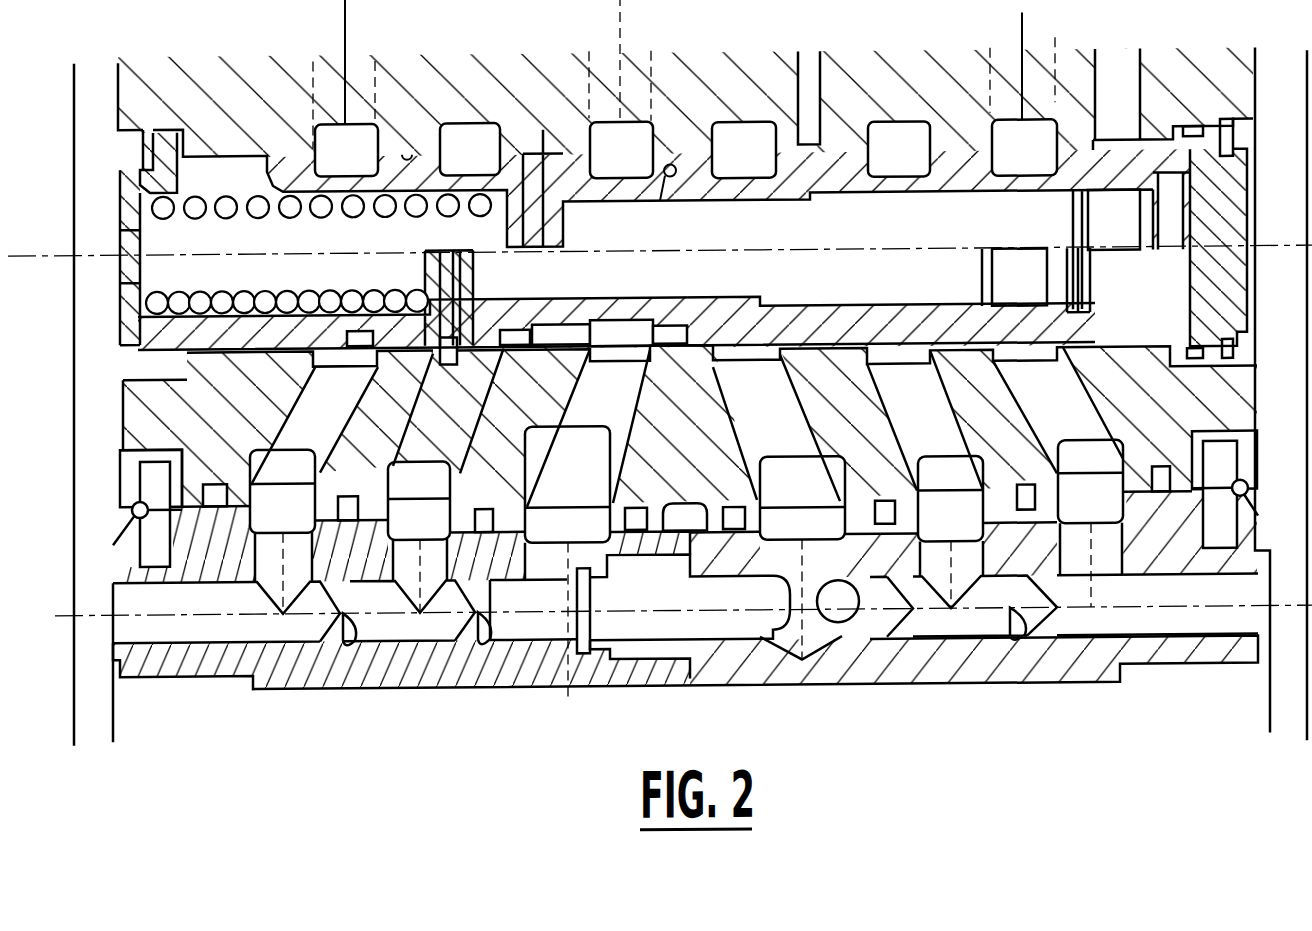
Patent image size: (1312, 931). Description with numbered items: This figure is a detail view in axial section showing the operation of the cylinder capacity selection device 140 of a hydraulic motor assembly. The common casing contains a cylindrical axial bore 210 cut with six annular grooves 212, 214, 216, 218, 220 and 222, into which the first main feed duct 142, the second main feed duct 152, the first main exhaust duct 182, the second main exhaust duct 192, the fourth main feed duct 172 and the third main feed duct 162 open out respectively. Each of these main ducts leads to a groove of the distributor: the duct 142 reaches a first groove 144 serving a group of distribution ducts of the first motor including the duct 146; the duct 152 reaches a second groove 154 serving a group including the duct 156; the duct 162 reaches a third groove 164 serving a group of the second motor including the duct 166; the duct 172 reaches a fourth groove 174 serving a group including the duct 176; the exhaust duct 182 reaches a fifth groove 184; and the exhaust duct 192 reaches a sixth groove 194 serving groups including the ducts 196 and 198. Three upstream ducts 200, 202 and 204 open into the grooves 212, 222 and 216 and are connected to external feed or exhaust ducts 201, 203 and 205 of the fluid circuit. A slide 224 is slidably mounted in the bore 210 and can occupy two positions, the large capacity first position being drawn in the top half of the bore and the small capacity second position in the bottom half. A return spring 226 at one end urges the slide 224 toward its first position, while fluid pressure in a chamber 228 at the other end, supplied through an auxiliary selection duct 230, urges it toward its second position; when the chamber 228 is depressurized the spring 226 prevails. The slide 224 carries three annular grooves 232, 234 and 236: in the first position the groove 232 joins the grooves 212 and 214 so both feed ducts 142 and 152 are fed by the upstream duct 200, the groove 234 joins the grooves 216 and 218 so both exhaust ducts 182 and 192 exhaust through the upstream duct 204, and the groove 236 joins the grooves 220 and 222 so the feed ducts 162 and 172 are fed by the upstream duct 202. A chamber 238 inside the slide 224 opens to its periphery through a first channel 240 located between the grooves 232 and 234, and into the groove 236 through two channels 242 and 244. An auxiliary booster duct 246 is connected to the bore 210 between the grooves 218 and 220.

The rotary actuator assembly 140 is at (568, 135).
The first main feed duct 142 is at (318, 398).
The first groove 144 is at (257, 450).
The distribution duct 146 is at (203, 630).
The second main feed duct 152 is at (440, 395).
The second groove 154 is at (390, 467).
The distribution duct 156 is at (390, 630).
The third main feed duct 162 is at (1080, 393).
The third groove 164 is at (1113, 441).
The distribution duct 166 is at (1137, 623).
The fourth main feed duct 172 is at (923, 420).
The fourth groove 174 is at (977, 467).
The distribution duct 176 is at (970, 623).
The first main exhaust duct 182 is at (624, 432).
The fifth groove 184 is at (542, 440).
The second main exhaust duct 192 is at (757, 440).
The sixth groove 194 is at (840, 462).
The distribution duct 196 is at (737, 630).
The distribution duct 198 is at (857, 617).
The first upstream duct 200 is at (310, 77).
The external duct 201 is at (345, 27).
The second upstream duct 202 is at (1057, 63).
The external duct 203 is at (1022, 20).
The third upstream duct 204 is at (653, 60).
The external duct 205 is at (618, 13).
The cylindrical axial bore 210 is at (402, 152).
The annular groove 212 is at (330, 133).
The annular groove 214 is at (455, 135).
The annular groove 216 is at (655, 133).
The annular groove 218 is at (737, 133).
The annular groove 220 is at (888, 133).
The annular groove 222 is at (1007, 130).
The slide 224 is at (818, 182).
The return spring 226 is at (318, 213).
The chamber 228 is at (1159, 299).
The auxiliary selection duct 230 is at (1127, 77).
The annular groove 232 is at (262, 305).
The annular groove 234 is at (663, 207).
The annular groove 236 is at (955, 162).
The chamber 238 is at (771, 254).
The first channel 240 is at (552, 205).
The channel 242 is at (870, 195).
The channel 244 is at (997, 183).
The auxiliary booster duct 246 is at (830, 55).